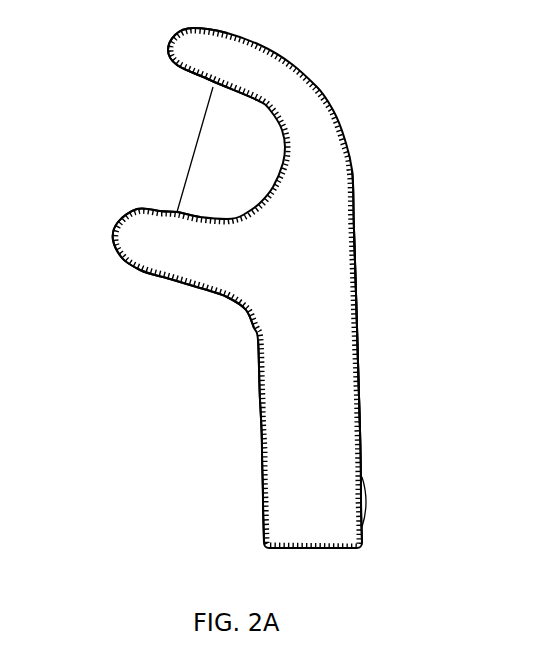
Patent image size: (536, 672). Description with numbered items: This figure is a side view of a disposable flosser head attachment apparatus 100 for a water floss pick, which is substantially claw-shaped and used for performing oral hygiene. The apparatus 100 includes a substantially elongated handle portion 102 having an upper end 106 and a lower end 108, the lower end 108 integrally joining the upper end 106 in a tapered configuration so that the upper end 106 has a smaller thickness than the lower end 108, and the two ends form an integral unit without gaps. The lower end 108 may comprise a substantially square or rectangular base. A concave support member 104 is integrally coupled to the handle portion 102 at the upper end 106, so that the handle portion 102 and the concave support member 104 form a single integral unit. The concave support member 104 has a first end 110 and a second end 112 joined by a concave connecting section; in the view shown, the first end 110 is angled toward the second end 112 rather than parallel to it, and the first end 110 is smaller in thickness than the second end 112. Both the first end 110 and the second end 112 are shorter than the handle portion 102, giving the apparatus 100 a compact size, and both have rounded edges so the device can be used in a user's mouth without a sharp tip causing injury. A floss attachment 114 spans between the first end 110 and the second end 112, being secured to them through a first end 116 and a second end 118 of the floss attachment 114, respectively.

The disposable flosser head attachment apparatus 100 is at (405, 190).
The handle portion 102 is at (378, 418).
The concave support member 104 is at (148, 290).
The upper end 106 is at (333, 343).
The lower end 108 is at (365, 525).
The first end 110 is at (178, 53).
The second end 112 is at (130, 240).
The floss attachment 114 is at (192, 158).
The first end of floss attachment 116 is at (200, 91).
The second end of floss attachment 118 is at (163, 201).